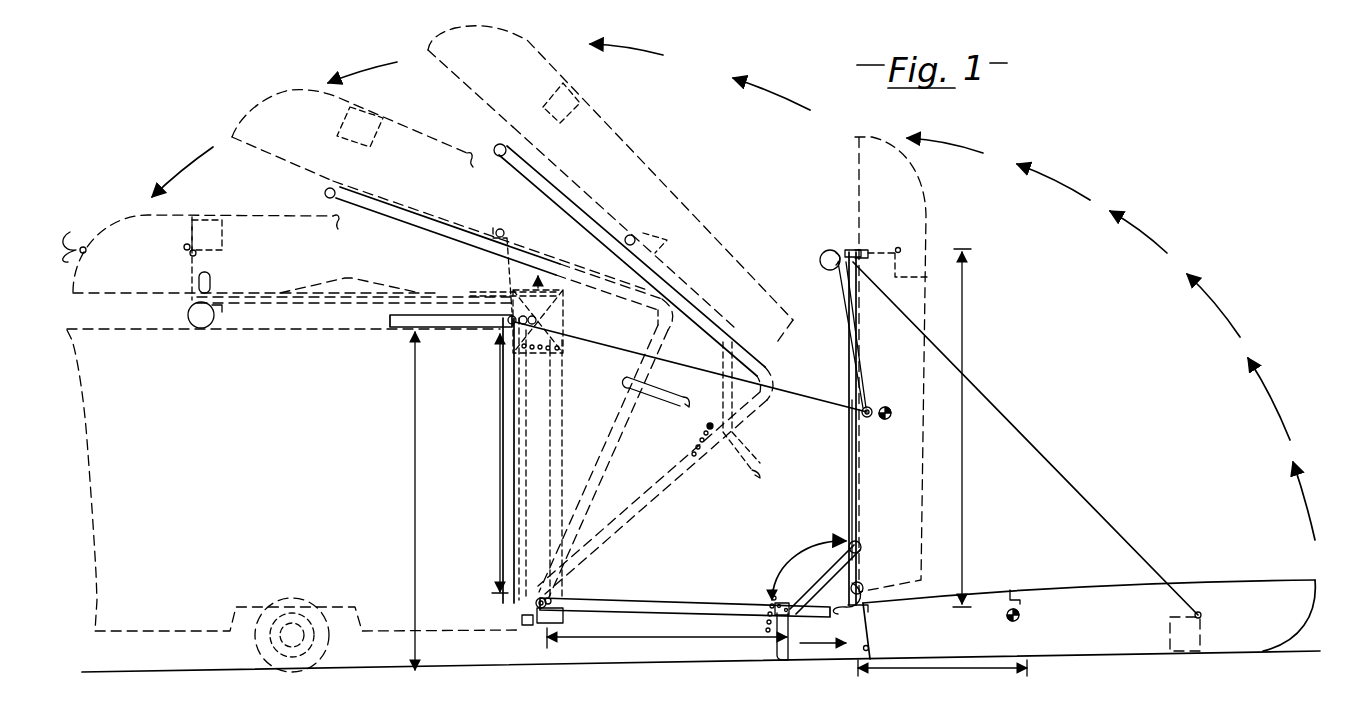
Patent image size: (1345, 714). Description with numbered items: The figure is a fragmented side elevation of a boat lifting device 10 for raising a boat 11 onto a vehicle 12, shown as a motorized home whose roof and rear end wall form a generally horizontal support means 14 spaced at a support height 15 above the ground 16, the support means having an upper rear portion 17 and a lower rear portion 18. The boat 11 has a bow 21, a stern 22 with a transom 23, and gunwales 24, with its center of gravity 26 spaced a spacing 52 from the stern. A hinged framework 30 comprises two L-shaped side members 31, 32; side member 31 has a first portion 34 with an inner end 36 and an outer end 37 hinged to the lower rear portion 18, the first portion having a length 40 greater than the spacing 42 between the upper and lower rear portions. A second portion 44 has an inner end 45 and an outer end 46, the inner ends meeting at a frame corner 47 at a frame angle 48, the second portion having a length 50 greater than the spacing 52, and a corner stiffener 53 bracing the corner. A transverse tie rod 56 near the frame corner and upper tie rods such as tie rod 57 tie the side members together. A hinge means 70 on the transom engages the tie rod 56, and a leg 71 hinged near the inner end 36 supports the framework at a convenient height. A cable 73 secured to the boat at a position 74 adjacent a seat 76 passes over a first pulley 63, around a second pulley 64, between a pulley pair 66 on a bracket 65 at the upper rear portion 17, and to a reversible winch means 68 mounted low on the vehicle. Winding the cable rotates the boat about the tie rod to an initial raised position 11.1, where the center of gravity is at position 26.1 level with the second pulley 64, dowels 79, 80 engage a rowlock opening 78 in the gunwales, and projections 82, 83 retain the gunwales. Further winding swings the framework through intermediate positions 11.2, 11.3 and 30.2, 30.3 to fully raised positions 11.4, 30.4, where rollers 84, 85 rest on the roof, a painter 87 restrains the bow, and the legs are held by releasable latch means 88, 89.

The device 10 is at (797, 240).
The boat 11 is at (1089, 596).
The initial raised position of the boat 11.1 is at (930, 216).
The intermediate position of the boat 11.2 is at (604, 121).
The intermediate position of the boat 11.3 is at (360, 109).
The fully raised position of the boat 11.4 is at (190, 213).
The vehicle 12 is at (93, 580).
The support means 14 is at (273, 331).
The support height 15 is at (415, 476).
The ground 16 is at (136, 656).
The upper rear portion 17 is at (505, 332).
The lower rear portion 18 is at (520, 605).
The bow 21 is at (1293, 625).
The stern 22 is at (875, 628).
The transom 23 is at (868, 648).
The gunwales 24 is at (1067, 588).
The center of gravity 26 is at (1021, 616).
The initial raised position of the center of gravity 26.1 is at (892, 418).
The hinged framework 30 is at (821, 428).
The intermediate position of the framework 30.2 is at (663, 493).
The intermediate position of the framework 30.3 is at (620, 440).
The fully raised position of the framework 30.4 is at (258, 304).
The L-shaped side member 31 is at (693, 369).
The L-shaped side member 32 is at (846, 402).
The first portion 34 is at (681, 586).
The inner end of the first portion 36 is at (848, 610).
The outer end of the first portion 37 is at (553, 600).
The length of the first portion 40 is at (598, 636).
The spacing 42 is at (496, 447).
The second portion 44 is at (847, 472).
The inner end of the second portion 45 is at (860, 585).
The outer end of the second portion 46 is at (842, 231).
The frame corner 47 is at (838, 592).
The frame angle 48 is at (782, 567).
The length of the second portion 50 is at (968, 326).
The spacing 52 is at (967, 667).
The corner stiffener 53 is at (857, 548).
The transverse tie rod 56 is at (897, 611).
The second upper tie rod 57 is at (819, 634).
The first pulley 63 is at (838, 250).
The second pulley 64 is at (868, 420).
The bracket 65 is at (398, 320).
The pulley pair 66 is at (506, 313).
The reversible winch means 68 is at (522, 625).
The hinge means 70 is at (867, 607).
The leg 71 is at (768, 630).
The cable 73 is at (1030, 432).
The position 74 is at (1200, 615).
The seat 76 is at (1170, 640).
The opening 78 is at (1013, 587).
The dowel 79 is at (917, 416).
The dowel 80 is at (917, 416).
The projection 82 is at (891, 249).
The projection 83 is at (861, 251).
The roller 84 is at (466, 303).
The roller 85 is at (195, 326).
The painter 87 is at (77, 243).
The releasable latch means 88 is at (489, 364).
The releasable latch means 89 is at (536, 351).